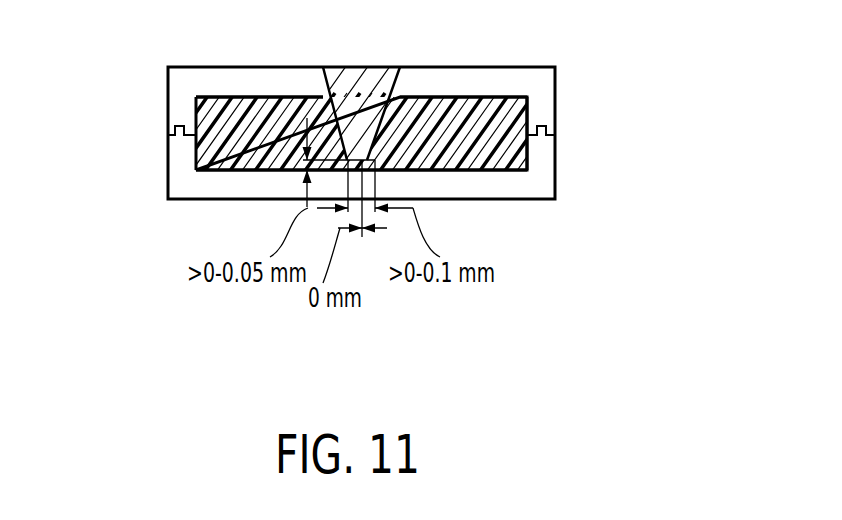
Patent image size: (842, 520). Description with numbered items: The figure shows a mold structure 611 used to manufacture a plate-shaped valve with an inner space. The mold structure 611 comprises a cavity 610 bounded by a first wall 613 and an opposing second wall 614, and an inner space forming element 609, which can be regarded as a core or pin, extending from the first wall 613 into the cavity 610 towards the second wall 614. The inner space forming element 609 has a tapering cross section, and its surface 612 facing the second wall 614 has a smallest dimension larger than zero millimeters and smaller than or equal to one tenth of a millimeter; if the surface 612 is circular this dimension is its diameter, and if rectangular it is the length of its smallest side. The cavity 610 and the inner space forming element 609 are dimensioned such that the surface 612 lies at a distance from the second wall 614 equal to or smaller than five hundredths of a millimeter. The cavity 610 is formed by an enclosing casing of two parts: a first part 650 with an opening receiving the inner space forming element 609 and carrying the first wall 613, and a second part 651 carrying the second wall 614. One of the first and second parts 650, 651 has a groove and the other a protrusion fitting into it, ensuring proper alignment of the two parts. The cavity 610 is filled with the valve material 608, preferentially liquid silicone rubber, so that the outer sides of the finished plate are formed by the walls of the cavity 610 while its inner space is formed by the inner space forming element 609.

The valve material 608 is at (529, 104).
The inner space forming element 609 is at (388, 67).
The cavity 610 is at (194, 155).
The mold structure 611 is at (142, 63).
The surface of the inner space forming element 612 is at (376, 170).
The first wall 613 is at (257, 100).
The second wall 614 is at (234, 163).
The first part 650 is at (555, 118).
The second part 651 is at (555, 145).